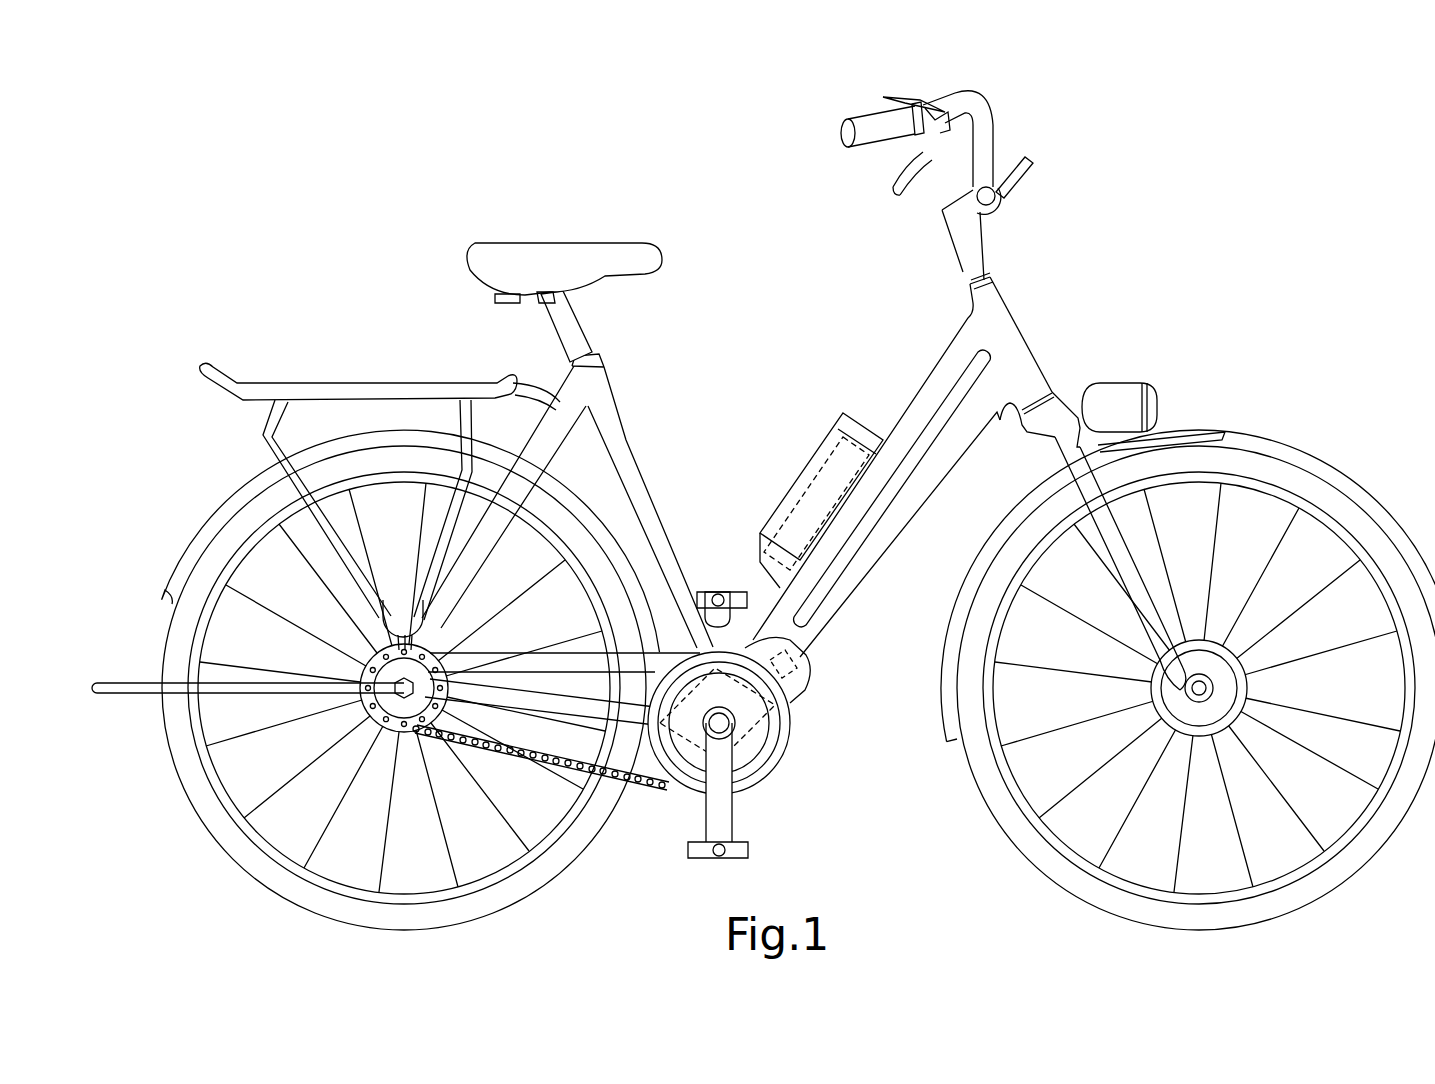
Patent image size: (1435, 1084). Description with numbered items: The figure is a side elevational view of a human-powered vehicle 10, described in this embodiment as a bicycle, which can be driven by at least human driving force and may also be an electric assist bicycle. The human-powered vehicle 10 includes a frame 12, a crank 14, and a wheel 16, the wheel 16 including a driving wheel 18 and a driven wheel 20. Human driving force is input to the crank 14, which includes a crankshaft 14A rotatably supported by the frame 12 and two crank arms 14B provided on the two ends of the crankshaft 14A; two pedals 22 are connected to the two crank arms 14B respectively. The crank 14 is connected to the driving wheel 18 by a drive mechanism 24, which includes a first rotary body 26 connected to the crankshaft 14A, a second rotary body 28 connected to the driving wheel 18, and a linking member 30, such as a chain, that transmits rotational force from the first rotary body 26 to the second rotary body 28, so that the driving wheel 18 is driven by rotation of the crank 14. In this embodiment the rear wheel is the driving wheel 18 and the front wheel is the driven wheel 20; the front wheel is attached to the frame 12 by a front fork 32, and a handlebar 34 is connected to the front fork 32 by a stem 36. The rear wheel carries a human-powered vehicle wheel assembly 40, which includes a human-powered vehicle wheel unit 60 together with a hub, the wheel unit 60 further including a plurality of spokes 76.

The human-powered vehicle 10 is at (1227, 149).
The frame 12 is at (932, 378).
The crank 14 is at (761, 705).
The crankshaft 14A is at (735, 735).
The crank arms 14B is at (748, 600).
The wheel 16 is at (762, 665).
The driving wheel 18 is at (375, 680).
The driven wheel 20 is at (1278, 456).
The pedals 22 is at (700, 588).
The drive mechanism 24 is at (654, 877).
The first rotary body 26 is at (793, 733).
The second rotary body 28 is at (394, 740).
The linking member 30 is at (643, 785).
The front fork 32 is at (1098, 540).
The handlebar 34 is at (878, 120).
The stem 36 is at (965, 97).
The human-powered vehicle wheel assembly 40 is at (205, 880).
The human-powered vehicle wheel unit 60 is at (420, 751).
The spokes 76 is at (567, 556).